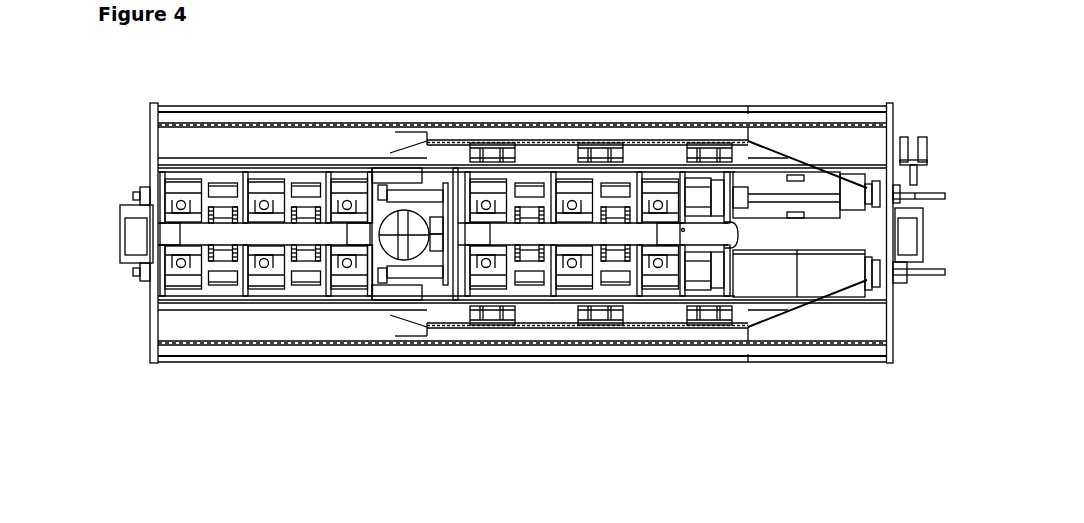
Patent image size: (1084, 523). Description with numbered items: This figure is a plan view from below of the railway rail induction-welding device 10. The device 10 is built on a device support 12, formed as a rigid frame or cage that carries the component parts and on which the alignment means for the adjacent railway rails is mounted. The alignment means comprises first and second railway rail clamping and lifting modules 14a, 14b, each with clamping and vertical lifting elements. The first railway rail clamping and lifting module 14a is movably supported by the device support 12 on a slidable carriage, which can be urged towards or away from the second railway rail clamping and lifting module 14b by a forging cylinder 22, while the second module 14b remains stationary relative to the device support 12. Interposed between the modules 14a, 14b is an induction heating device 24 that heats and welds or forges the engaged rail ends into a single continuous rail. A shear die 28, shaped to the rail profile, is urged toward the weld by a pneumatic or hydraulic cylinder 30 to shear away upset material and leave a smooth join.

The railway rail induction-welding device 10 is at (128, 117).
The device support 12 is at (897, 344).
The first railway rail clamping and lifting module 14a is at (591, 274).
The second railway rail clamping and lifting module 14b is at (275, 278).
The forging cylinder 22 is at (852, 284).
The induction heating device 24 is at (404, 160).
The shear die 28 is at (448, 278).
The pneumatic or hydraulic cylinder 30 is at (420, 276).